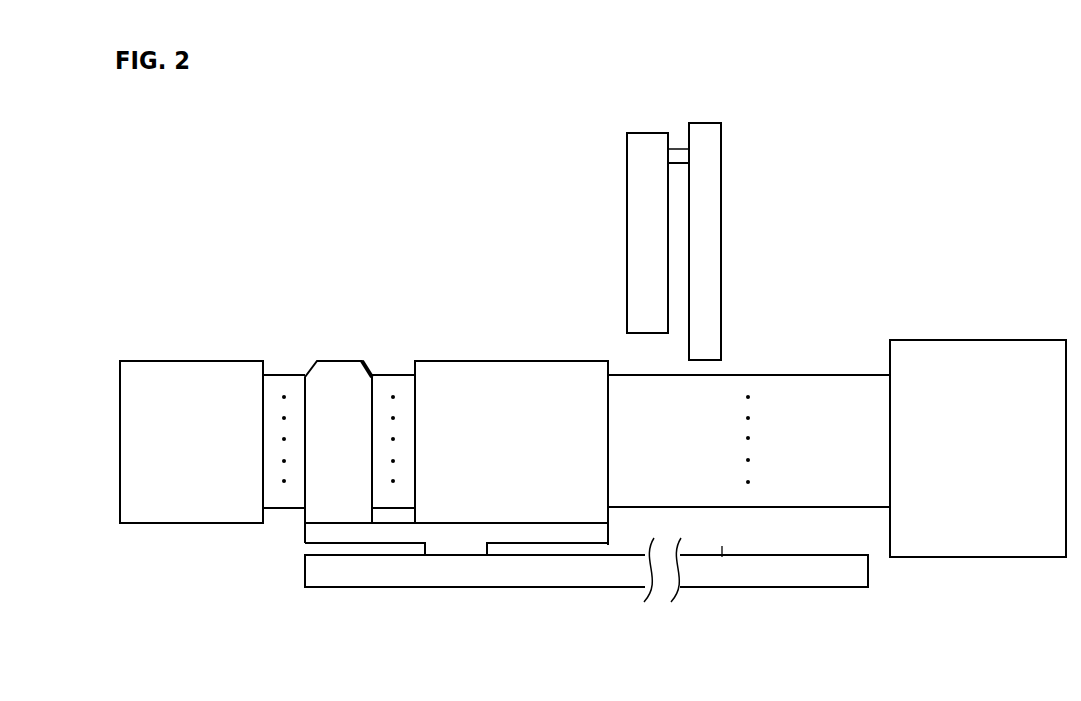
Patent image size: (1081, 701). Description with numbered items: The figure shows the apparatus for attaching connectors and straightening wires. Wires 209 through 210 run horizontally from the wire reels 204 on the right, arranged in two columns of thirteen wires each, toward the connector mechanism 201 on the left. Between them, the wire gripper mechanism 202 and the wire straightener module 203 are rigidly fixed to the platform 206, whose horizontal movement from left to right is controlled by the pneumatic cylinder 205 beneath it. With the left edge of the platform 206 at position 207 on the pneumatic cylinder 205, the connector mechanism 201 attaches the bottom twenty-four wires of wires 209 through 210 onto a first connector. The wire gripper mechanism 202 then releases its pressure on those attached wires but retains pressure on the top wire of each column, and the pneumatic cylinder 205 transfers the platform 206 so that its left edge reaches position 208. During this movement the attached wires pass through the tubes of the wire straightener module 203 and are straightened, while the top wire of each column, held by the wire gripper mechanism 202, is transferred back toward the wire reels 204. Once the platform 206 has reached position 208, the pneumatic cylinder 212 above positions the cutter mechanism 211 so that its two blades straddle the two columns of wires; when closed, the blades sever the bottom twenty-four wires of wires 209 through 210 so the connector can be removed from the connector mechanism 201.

The connector mechanism 201 is at (173, 361).
The wire gripper mechanism 202 is at (332, 361).
The wire straightener module 203 is at (482, 361).
The wire reels 204 is at (970, 340).
The pneumatic cylinder 205 is at (815, 587).
The platform 206 is at (607, 533).
The position 207 is at (305, 572).
The position 208 is at (722, 546).
The wire 209 is at (780, 375).
The wire 210 is at (795, 507).
The cutter mechanism 211 is at (627, 169).
The pneumatic cylinder 212 is at (721, 186).